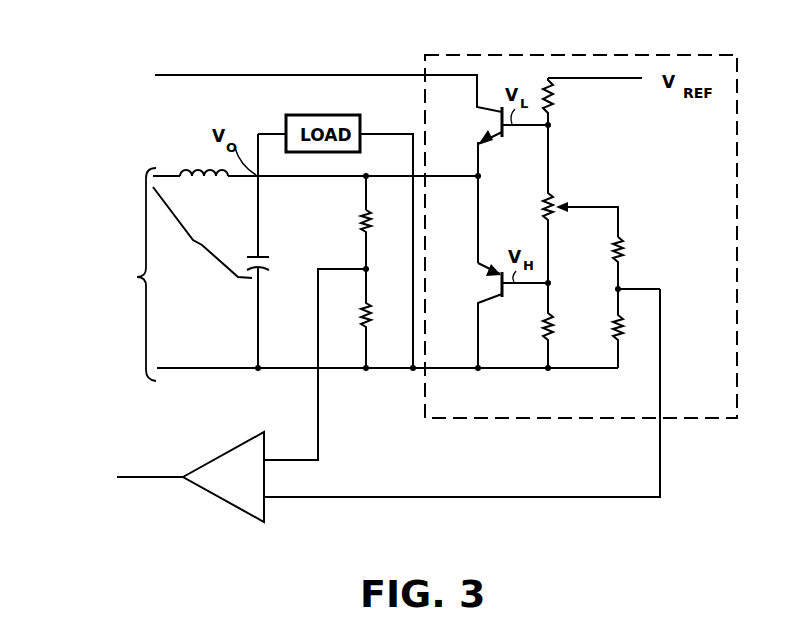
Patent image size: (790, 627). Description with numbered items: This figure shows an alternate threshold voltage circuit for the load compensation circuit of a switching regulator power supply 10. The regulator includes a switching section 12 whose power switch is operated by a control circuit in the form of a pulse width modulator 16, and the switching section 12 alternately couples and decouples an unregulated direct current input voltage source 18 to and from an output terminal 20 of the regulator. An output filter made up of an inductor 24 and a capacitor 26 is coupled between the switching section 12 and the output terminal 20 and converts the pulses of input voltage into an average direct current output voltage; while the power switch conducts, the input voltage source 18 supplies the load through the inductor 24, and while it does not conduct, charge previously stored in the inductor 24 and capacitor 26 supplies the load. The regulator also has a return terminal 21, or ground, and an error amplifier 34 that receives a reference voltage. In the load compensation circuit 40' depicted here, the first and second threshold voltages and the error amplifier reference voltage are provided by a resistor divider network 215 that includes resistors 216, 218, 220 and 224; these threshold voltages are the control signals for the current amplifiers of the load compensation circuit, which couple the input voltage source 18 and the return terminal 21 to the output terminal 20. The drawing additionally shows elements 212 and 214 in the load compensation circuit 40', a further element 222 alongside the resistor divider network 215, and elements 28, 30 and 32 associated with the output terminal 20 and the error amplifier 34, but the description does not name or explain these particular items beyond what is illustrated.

The switching regulator power supply 10 is at (238, 62).
The switching section 12 is at (93, 274).
The pulse width modulator 16 is at (102, 467).
The input voltage source 18 is at (276, 87).
The output terminal 20 is at (262, 175).
The return terminal 21 is at (256, 366).
The inductor 24 is at (213, 168).
The capacitor 26 is at (250, 262).
The feedback node 28 is at (348, 264).
The feedback resistor 30 is at (358, 218).
The feedback resistor 32 is at (360, 322).
The error amplifier 34 is at (226, 455).
The load compensation circuit 40' is at (581, 217).
The transistor 212 is at (493, 125).
The transistor 214 is at (495, 285).
The resistor divider network 215 is at (613, 195).
The resistor 216 is at (571, 103).
The resistor 218 is at (562, 205).
The resistor 220 is at (528, 325).
The resistor 222 is at (641, 264).
The resistor 224 is at (598, 328).